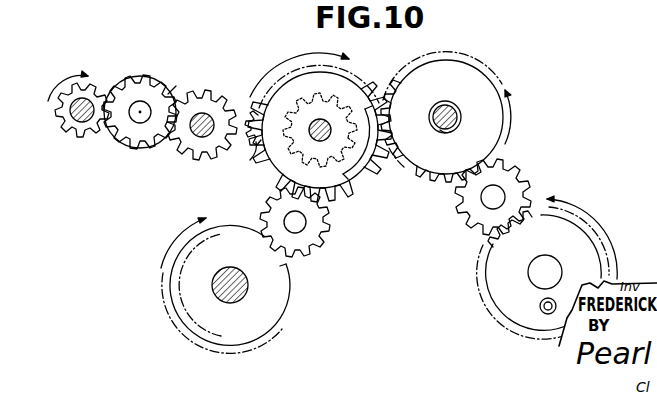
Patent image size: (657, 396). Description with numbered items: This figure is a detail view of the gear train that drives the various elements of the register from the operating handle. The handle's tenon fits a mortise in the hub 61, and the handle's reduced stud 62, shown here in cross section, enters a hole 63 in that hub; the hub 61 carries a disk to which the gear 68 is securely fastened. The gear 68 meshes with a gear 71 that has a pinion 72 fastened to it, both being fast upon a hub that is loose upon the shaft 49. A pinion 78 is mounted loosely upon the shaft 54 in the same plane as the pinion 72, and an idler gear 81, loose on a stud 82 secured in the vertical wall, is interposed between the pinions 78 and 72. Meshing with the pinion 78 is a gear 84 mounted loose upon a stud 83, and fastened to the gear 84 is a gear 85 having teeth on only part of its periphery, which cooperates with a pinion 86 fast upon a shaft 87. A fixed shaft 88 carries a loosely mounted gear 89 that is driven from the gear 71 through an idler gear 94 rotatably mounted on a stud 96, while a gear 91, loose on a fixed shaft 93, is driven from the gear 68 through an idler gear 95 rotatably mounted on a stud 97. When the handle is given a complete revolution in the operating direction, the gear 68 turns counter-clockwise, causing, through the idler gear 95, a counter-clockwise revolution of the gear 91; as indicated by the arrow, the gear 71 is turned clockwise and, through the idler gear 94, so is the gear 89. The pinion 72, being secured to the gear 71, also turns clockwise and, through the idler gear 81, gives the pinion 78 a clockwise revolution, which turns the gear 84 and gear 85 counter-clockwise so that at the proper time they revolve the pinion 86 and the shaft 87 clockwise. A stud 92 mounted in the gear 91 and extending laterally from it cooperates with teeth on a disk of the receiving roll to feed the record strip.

The shaft 49 is at (328, 142).
The shaft 54 is at (202, 138).
The hub 61 is at (440, 81).
The stud 62 is at (461, 113).
The hole 63 is at (452, 132).
The gear 68 is at (478, 78).
The gear 71 is at (347, 91).
The pinion 72 is at (317, 112).
The pinion 78 is at (210, 98).
The idler gear 81 is at (242, 108).
The stud 82 is at (252, 152).
The stud 83 is at (122, 148).
The gear 84 is at (148, 90).
The gear 85 is at (171, 88).
The pinion 86 is at (108, 100).
The shaft 87 is at (88, 123).
The fixed shaft 88 is at (243, 292).
The gear 89 is at (290, 283).
The gear 91 is at (588, 247).
The stud 92 is at (542, 301).
The fixed shaft 93 is at (537, 264).
The idler gear 94 is at (312, 221).
The idler gear 95 is at (511, 178).
The stud 96 is at (290, 220).
The stud 97 is at (493, 194).